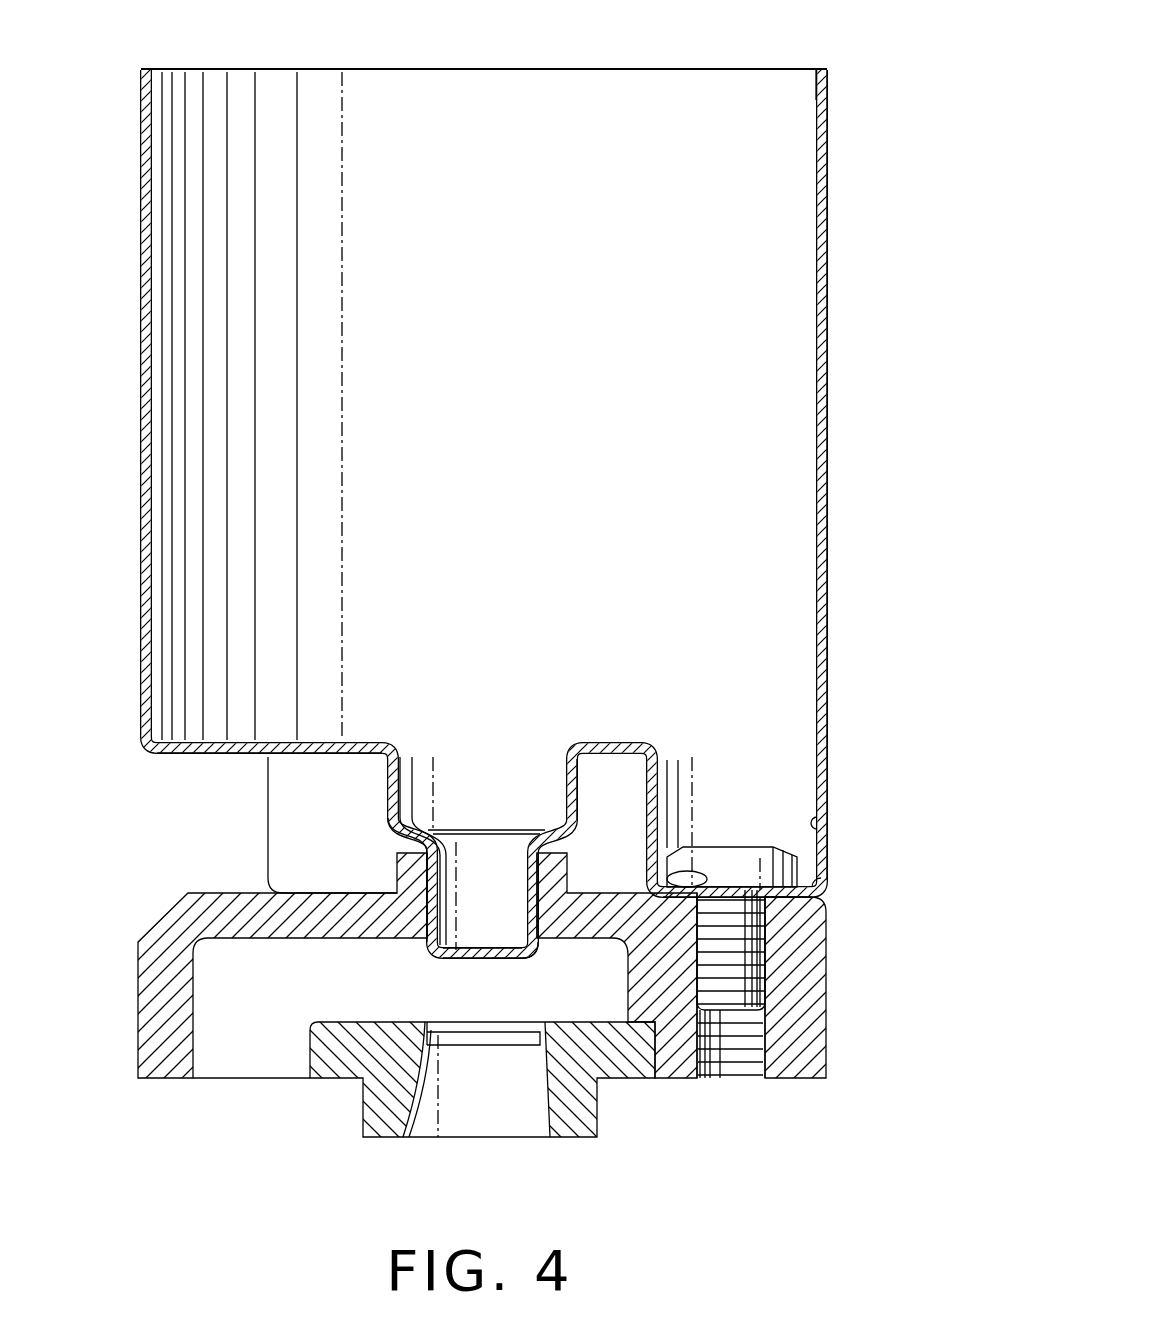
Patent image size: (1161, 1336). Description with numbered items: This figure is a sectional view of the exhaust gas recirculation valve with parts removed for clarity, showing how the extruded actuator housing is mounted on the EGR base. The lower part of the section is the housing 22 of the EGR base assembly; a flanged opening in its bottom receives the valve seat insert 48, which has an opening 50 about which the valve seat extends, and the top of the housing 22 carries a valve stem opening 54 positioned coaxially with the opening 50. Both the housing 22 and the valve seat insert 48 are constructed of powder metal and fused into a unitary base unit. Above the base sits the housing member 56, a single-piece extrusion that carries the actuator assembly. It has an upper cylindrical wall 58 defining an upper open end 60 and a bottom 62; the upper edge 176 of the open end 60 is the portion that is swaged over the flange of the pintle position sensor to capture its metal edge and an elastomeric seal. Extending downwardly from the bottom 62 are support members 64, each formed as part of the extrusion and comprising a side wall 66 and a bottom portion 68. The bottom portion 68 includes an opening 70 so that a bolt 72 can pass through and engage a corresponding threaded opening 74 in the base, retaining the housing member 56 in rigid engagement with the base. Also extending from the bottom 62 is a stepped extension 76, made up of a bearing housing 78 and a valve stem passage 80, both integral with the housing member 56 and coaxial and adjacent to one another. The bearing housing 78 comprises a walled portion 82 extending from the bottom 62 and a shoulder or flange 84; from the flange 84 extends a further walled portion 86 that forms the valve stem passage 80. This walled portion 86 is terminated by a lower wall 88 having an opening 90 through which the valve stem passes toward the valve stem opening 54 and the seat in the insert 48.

The housing 22 is at (128, 996).
The valve seat insert 48 is at (590, 1100).
The opening 50 is at (550, 1110).
The valve stem opening 54 is at (440, 945).
The housing member 56 is at (830, 379).
The upper cylindrical wall 58 is at (822, 466).
The open end 60 is at (815, 97).
The bottom 62 is at (358, 745).
The support member 64 is at (283, 850).
The side wall 66 is at (818, 823).
The bottom portion 68 is at (815, 876).
The opening 70 is at (690, 885).
The bolt 72 is at (722, 860).
The threaded opening 74 is at (757, 1050).
The stepped extension 76 is at (375, 825).
The bearing housing 78 is at (483, 792).
The valve stem passage 80 is at (485, 917).
The walled portion 82 is at (392, 802).
The flange 84 is at (575, 825).
The walled portion 86 is at (432, 892).
The lower wall 88 is at (520, 950).
The opening 90 is at (455, 960).
The upper edge 176 is at (826, 110).